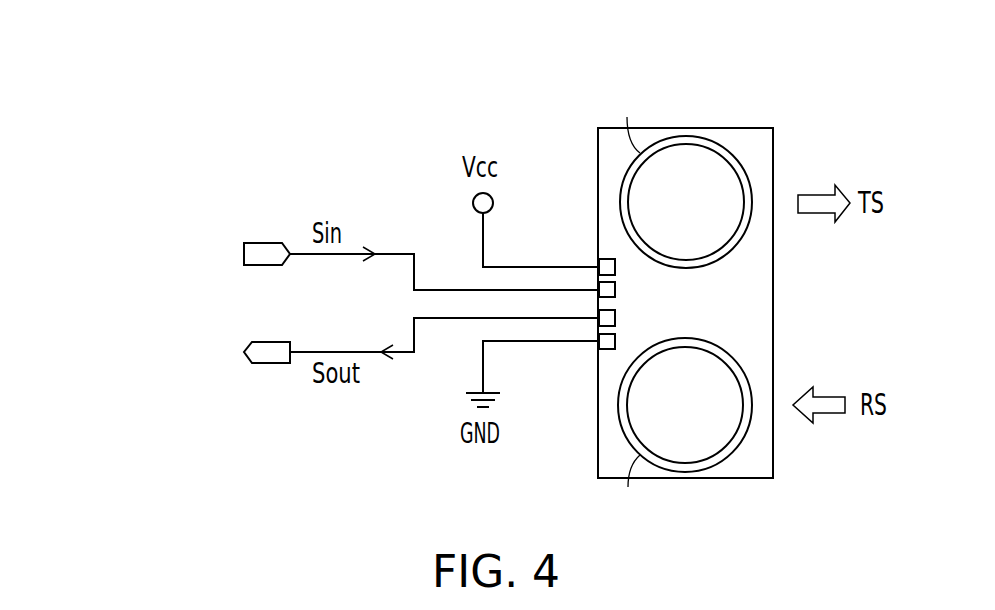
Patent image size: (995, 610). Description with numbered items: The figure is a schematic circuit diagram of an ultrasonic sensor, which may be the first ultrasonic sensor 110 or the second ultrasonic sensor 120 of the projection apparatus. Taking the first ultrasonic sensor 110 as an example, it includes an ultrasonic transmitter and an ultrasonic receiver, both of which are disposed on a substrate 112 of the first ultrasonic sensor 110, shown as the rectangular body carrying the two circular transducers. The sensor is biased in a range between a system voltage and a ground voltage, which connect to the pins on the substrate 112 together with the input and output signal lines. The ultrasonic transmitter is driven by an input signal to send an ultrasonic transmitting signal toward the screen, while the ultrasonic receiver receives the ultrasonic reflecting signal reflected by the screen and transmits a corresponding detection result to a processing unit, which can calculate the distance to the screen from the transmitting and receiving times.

The first ultrasonic sensor 110 is at (700, 92).
The second ultrasonic sensor 120 is at (730, 279).
The substrate 112 is at (723, 478).